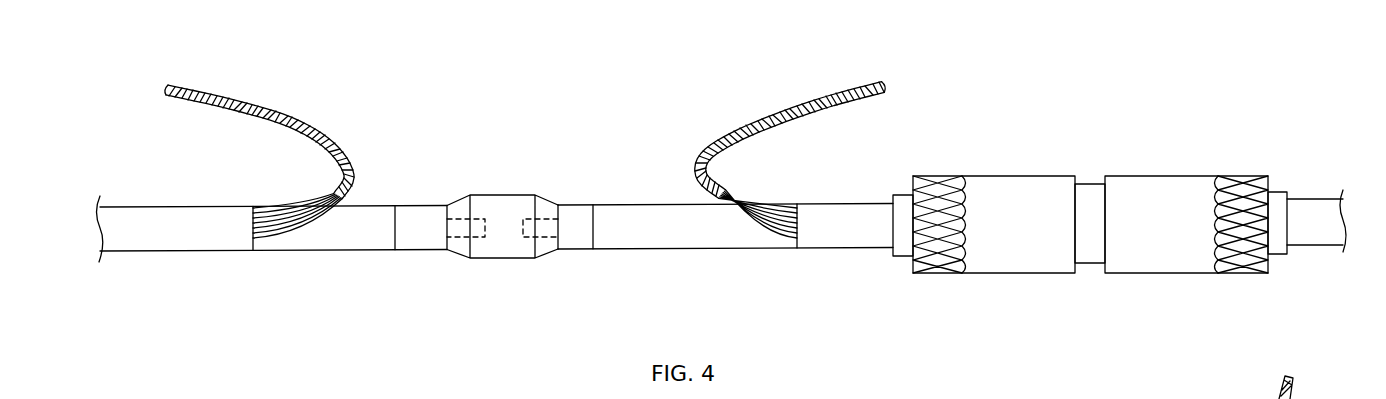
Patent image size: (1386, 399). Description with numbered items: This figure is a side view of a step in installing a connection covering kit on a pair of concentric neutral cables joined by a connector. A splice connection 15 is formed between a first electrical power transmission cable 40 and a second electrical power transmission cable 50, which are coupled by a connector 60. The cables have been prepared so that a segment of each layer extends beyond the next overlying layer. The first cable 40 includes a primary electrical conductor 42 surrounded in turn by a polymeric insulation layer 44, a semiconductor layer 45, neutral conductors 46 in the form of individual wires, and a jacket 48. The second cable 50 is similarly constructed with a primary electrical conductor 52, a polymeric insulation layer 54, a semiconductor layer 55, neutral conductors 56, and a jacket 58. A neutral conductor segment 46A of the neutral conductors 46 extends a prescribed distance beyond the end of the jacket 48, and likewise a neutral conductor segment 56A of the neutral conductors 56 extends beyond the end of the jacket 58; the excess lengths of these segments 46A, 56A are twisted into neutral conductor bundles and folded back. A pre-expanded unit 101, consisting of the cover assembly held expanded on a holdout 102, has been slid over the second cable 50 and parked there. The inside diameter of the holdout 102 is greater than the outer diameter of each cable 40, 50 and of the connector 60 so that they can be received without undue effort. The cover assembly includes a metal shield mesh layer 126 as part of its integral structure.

The splice connection 15 is at (573, 180).
The electrical power transmission cable 40 is at (378, 182).
The primary electrical conductor 42 is at (477, 237).
The polymeric insulation layer 44 is at (423, 240).
The semiconductor layer 45 is at (353, 237).
The neutral conductors 46 is at (270, 235).
The neutral conductor segment 46A is at (210, 90).
The jacket 48 is at (180, 222).
The electrical power transmission cable 50 is at (813, 185).
The primary electrical conductor 52 is at (548, 237).
The polymeric insulation layer 54 is at (575, 235).
The semiconductor layer 55 is at (620, 233).
The neutral conductors 56 is at (762, 220).
The neutral conductor segment 56A is at (862, 95).
The jacket 58 is at (865, 230).
The connector 60 is at (507, 210).
The pre-expanded unit 101 is at (1093, 158).
The holdout 102 is at (1277, 200).
The metal shield mesh layer 126 is at (1237, 268).